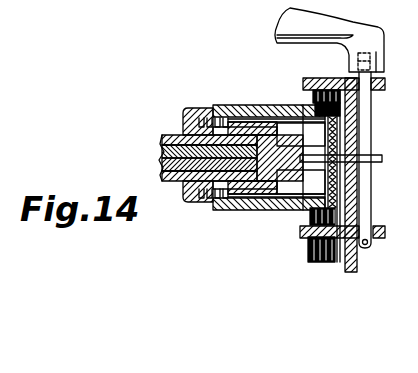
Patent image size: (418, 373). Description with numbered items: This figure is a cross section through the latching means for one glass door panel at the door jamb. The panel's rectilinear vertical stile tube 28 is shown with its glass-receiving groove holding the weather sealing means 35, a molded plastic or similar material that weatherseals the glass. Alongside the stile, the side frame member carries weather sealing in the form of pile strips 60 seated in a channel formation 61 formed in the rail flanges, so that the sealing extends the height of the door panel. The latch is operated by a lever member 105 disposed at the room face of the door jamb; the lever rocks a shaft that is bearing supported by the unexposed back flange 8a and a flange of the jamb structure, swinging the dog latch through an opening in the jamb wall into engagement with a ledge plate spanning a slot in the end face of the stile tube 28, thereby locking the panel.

The unexposed back flange 8a is at (384, 228).
The vertical stile tube 28 is at (230, 106).
The weather sealing means 35 is at (180, 130).
The pile strips 60 is at (314, 106).
The channel formation 61 is at (312, 92).
The lever member 105 is at (276, 30).